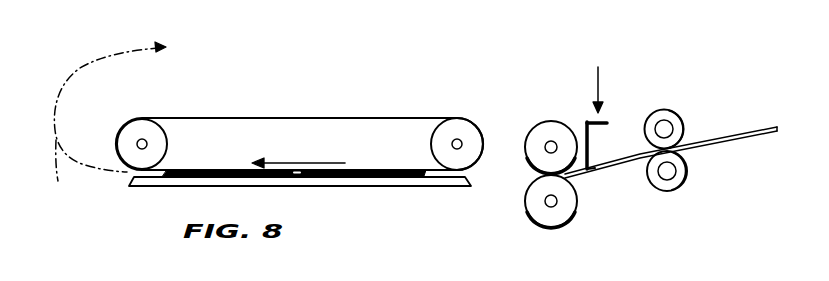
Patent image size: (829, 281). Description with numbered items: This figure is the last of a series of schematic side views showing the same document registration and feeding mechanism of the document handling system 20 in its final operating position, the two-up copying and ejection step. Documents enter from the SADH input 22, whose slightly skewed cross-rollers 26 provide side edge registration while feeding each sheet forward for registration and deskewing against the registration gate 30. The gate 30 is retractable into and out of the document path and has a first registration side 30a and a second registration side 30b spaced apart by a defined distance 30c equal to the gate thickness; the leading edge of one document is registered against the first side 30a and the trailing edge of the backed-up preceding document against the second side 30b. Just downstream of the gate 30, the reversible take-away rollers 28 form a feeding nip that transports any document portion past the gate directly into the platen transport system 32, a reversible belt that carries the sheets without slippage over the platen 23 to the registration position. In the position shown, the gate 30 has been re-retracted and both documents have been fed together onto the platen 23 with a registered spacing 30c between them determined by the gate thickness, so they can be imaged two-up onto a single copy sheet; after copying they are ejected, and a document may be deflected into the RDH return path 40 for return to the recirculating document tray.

The document handling system 20 is at (293, 153).
The SADH input 22 is at (702, 130).
The platen 23 is at (166, 180).
The cross-rollers 26 is at (667, 122).
The take-away rollers 28 is at (535, 138).
The registration gate 30 is at (614, 143).
The first registration side 30a is at (590, 152).
The second registration side 30b is at (578, 182).
The defined distance 30c is at (297, 176).
The platen transport system 32 is at (317, 118).
The RDH return path 40 is at (110, 123).